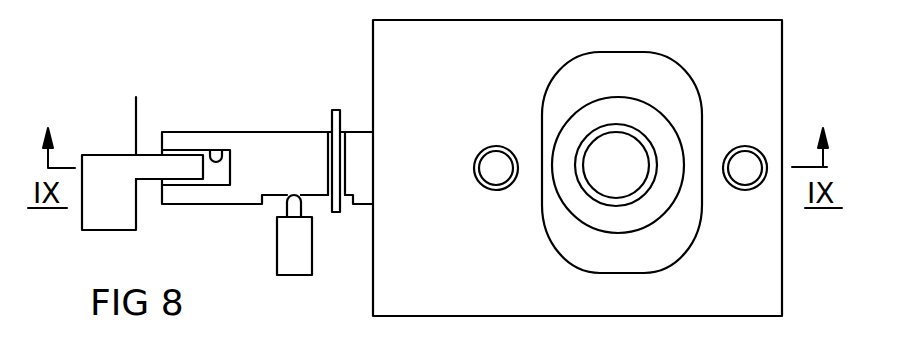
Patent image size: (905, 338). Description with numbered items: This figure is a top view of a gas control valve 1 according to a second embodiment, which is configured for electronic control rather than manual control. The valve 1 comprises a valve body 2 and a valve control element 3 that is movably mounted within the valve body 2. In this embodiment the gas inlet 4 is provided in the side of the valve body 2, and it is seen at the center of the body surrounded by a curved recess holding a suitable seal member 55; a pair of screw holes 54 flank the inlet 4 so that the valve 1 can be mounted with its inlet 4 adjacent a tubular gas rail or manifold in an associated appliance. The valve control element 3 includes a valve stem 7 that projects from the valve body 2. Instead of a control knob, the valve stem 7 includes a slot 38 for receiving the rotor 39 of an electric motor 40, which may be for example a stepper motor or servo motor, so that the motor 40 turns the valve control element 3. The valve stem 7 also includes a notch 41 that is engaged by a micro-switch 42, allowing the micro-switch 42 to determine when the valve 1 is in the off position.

The gas control valve 1 is at (206, 54).
The valve body 2 is at (760, 60).
The valve control element 3 is at (358, 100).
The gas inlet 4 is at (627, 180).
The valve stem 7 is at (288, 143).
The slot 38 is at (221, 157).
The rotor 39 is at (173, 168).
The electric motor 40 is at (112, 107).
The notch 41 is at (313, 195).
The micro-switch 42 is at (295, 247).
The screw holes 54 is at (495, 157).
The seal member 55 is at (632, 220).